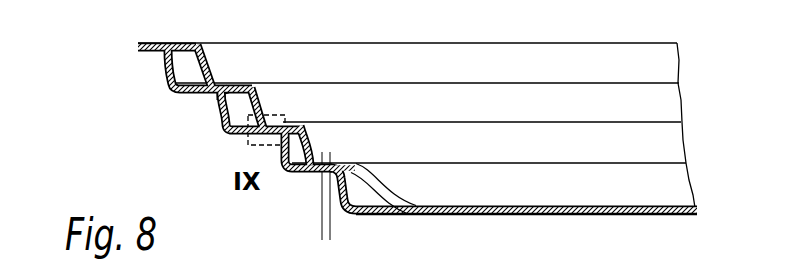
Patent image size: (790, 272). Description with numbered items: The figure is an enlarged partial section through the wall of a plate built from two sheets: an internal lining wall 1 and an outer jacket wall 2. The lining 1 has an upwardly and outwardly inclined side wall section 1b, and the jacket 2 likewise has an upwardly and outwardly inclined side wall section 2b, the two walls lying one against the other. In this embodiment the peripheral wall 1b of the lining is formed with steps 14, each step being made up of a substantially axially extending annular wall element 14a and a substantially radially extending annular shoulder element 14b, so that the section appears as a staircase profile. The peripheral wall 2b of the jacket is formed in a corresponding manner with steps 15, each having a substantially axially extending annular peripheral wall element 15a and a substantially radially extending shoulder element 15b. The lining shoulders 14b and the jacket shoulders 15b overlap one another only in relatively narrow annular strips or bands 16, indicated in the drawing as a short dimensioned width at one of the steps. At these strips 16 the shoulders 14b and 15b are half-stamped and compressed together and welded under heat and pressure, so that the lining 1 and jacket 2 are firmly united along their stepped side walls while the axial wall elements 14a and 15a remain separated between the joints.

The internal lining wall 1 is at (630, 203).
The side wall section of lining 1b is at (428, 103).
The outer jacket wall 2 is at (545, 223).
The side wall section of jacket 2b is at (285, 180).
The steps 14 is at (262, 90).
The annular wall elements 14a is at (310, 140).
The annular shoulder elements 14b is at (228, 83).
The steps 15 is at (212, 100).
The annular peripheral wall elements 15a is at (223, 116).
The shoulder elements 15b is at (246, 134).
The annular strips 16 is at (332, 231).